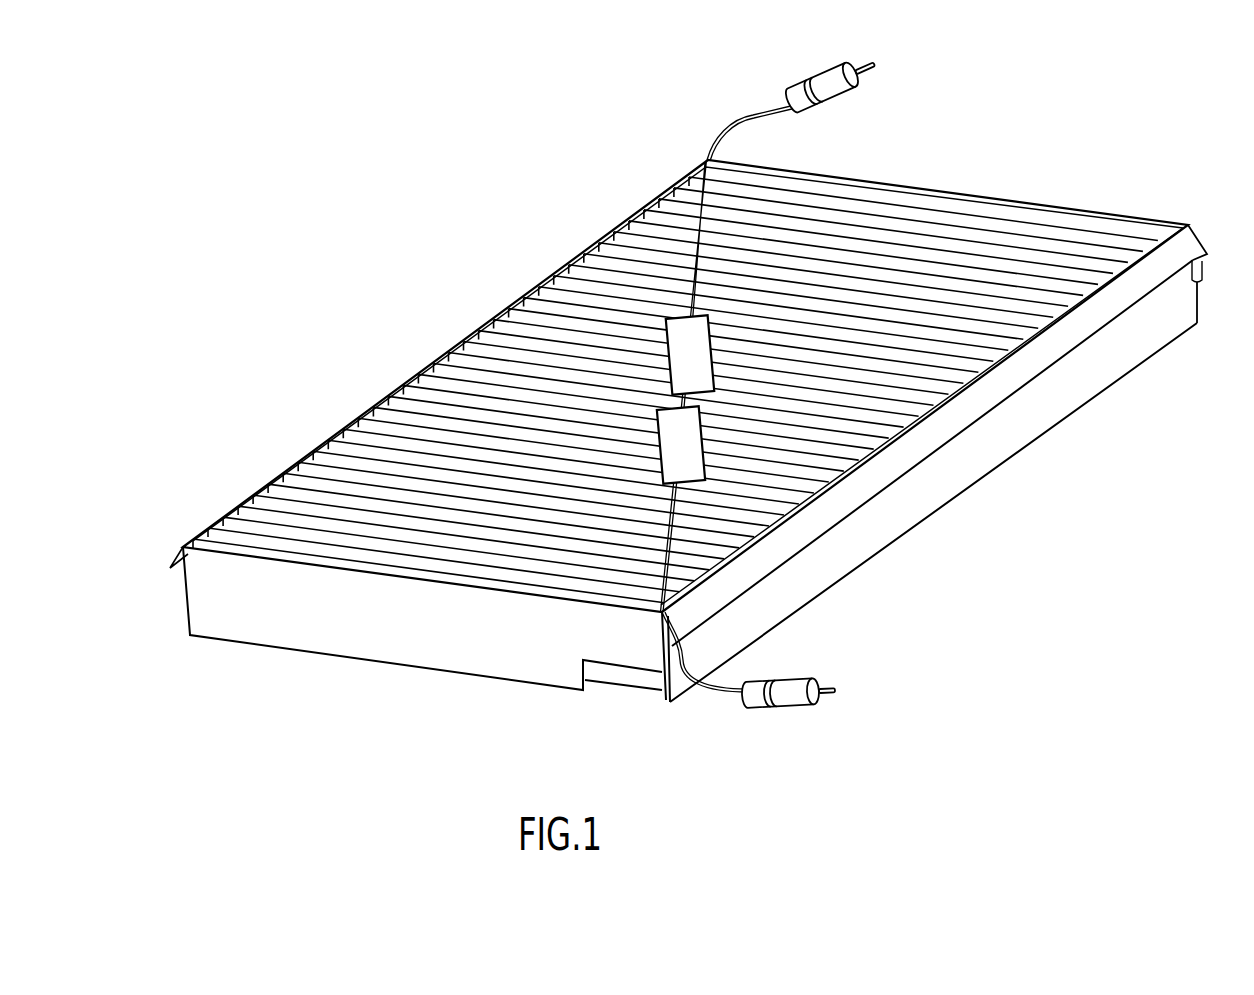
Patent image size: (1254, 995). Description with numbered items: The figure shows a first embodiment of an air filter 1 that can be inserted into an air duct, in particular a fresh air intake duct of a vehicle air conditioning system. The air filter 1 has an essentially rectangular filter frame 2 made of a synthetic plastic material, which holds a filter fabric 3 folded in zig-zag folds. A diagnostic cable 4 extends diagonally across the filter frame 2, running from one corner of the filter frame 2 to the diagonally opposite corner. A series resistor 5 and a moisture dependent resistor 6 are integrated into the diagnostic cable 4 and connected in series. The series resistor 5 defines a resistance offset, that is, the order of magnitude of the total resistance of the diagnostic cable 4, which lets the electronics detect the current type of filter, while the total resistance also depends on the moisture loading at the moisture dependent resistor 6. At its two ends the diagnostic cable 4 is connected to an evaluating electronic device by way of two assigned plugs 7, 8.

The air filter 1 is at (373, 238).
The filter frame 2 is at (380, 627).
The filter fabric 3 is at (857, 357).
The diagnostic cable 4 is at (703, 263).
The series resistor 5 is at (670, 423).
The moisture dependent resistor 6 is at (677, 330).
The plug 7 is at (790, 695).
The plug 8 is at (837, 95).